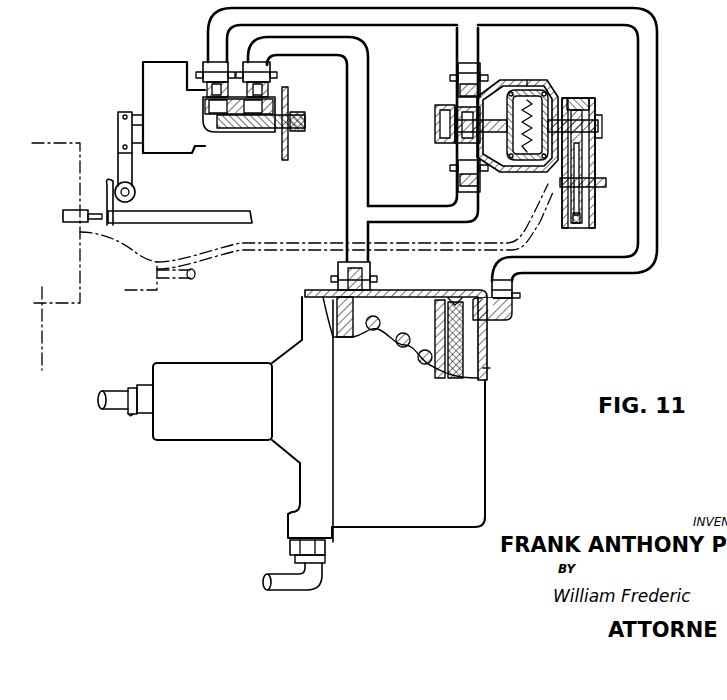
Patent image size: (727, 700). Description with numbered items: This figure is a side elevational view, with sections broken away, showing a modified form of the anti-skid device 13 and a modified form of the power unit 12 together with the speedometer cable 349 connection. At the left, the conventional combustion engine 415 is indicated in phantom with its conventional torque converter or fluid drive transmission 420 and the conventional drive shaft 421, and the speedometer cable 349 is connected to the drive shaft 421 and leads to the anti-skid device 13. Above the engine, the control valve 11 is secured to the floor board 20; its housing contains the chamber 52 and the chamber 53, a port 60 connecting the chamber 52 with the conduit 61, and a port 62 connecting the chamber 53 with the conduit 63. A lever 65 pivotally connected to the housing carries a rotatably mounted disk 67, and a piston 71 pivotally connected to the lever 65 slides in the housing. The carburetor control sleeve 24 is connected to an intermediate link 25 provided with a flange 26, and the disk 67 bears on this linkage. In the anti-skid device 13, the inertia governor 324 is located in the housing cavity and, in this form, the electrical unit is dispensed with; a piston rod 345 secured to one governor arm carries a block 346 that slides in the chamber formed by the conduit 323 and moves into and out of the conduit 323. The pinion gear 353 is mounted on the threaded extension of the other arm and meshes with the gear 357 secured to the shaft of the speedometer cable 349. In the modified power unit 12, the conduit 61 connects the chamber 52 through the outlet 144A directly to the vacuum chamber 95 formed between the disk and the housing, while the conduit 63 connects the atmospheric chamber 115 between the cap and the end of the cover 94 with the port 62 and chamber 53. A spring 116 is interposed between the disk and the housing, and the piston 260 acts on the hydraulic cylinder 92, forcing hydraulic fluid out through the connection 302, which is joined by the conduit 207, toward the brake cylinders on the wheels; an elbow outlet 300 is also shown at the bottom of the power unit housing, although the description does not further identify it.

The control valve 11 is at (133, 72).
The power unit 12 is at (416, 542).
The anti-skid unit 13 is at (509, 184).
The floor board 20 is at (289, 153).
The control sleeve 24 is at (72, 210).
The intermediate link 25 is at (196, 220).
The flange 26 is at (104, 180).
The chamber 52 is at (288, 113).
The chamber 53 is at (222, 112).
The port 60 is at (270, 62).
The conduit 61 is at (370, 72).
The port 62 is at (205, 64).
The conduit 63 is at (660, 85).
The lever 65 is at (118, 125).
The disk 67 is at (136, 192).
The piston 71 is at (248, 130).
The hydraulic cylinder 92 is at (216, 424).
The cover 94 is at (488, 345).
The vacuum chamber 95 is at (424, 319).
The atmospheric chamber 115 is at (475, 330).
The spring 116 is at (392, 342).
The outlet 144A is at (372, 268).
The conduit 207 is at (108, 406).
The piston 260 is at (497, 368).
The elbow outlet 300 is at (270, 575).
The connection 302 is at (148, 413).
The conduit 323 is at (458, 62).
The inertia governor 324 is at (545, 76).
The piston rod 345 is at (498, 118).
The block 346 is at (440, 150).
The speedometer cable 349 is at (297, 243).
The pinion gear 353 is at (578, 102).
The gear 357 is at (580, 215).
The combustion engine 415 is at (55, 267).
The torque converter 420 is at (125, 300).
The drive shaft 421 is at (177, 280).